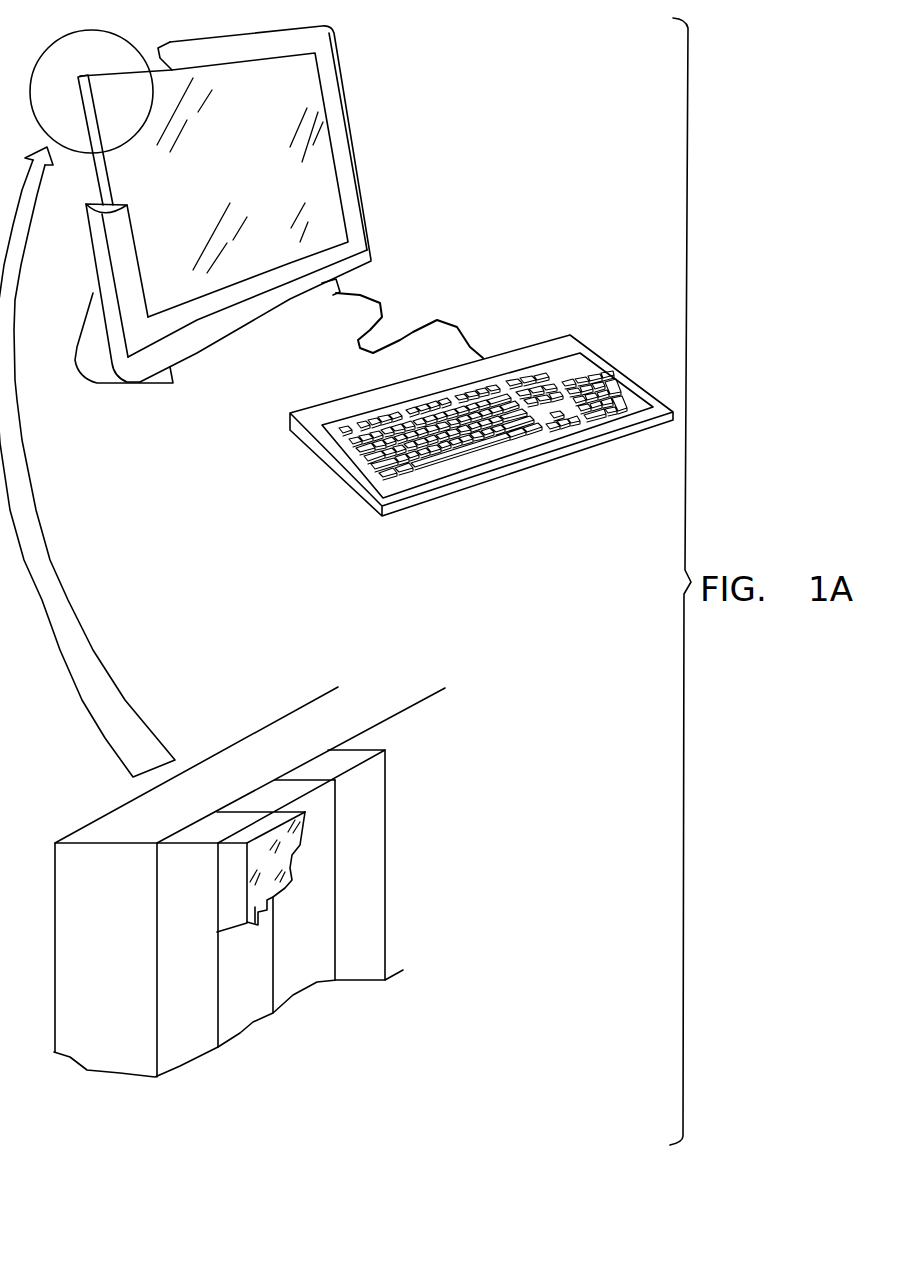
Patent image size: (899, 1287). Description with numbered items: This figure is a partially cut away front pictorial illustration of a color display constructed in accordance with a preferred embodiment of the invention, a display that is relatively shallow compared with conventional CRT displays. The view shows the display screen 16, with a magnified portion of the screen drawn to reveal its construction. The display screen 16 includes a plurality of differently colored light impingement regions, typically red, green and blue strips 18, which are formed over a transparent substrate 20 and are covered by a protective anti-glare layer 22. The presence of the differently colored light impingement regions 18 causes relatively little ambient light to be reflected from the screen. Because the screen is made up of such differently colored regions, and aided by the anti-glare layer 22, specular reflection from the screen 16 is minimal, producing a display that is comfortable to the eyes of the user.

The display screen 16 is at (322, 90).
The red, green and blue strips 18 is at (307, 772).
The transparent substrate 20 is at (118, 821).
The protective anti-glare layer 22 is at (254, 908).